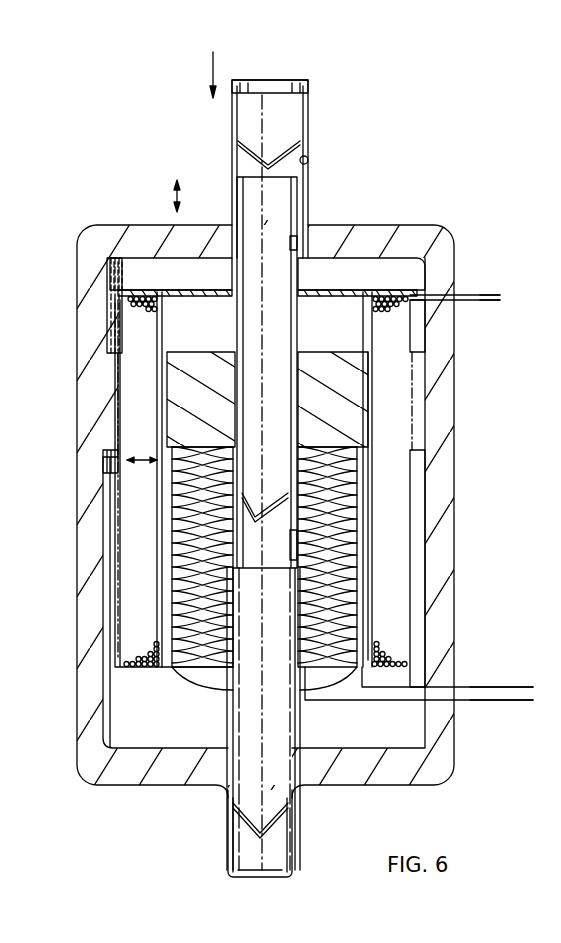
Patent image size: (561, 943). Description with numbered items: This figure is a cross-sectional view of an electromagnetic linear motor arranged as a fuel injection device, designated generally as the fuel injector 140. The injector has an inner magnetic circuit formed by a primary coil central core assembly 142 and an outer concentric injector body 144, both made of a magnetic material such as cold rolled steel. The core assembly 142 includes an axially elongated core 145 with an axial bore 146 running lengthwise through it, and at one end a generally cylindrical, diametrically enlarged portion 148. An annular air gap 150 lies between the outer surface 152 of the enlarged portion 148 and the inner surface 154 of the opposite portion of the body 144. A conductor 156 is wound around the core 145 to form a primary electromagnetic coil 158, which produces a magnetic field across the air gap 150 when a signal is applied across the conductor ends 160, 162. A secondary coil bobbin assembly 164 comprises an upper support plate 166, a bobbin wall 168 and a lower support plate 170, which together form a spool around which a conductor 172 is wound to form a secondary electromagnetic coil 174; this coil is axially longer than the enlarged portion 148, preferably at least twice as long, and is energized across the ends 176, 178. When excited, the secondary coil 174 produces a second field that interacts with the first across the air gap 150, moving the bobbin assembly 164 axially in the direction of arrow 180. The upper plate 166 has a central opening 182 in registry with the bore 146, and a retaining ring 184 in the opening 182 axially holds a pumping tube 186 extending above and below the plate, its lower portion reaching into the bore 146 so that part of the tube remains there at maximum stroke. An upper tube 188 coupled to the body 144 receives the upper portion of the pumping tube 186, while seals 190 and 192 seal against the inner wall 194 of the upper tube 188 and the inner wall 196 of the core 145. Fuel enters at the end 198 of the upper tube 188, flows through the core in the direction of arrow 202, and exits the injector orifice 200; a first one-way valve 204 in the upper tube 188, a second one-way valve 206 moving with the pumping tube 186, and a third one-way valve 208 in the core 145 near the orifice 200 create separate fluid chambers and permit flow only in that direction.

The fuel injector 140 is at (426, 118).
The core assembly 142 is at (113, 340).
The injector body 144 is at (82, 314).
The core 145 is at (295, 702).
The axial bore 146 is at (246, 678).
The diametrically enlarged portion 148 is at (214, 366).
The annular air gap 150 is at (118, 468).
The outer surface 152 is at (370, 345).
The inner surface 154 is at (415, 398).
The conductor 156 is at (320, 702).
The primary electromagnetic coil 158 is at (212, 682).
The conductor end 160 is at (490, 687).
The conductor end 162 is at (490, 700).
The bobbin assembly 164 is at (342, 275).
The upper support plate 166 is at (370, 296).
The bobbin wall 168 is at (370, 302).
The lower support plate 170 is at (152, 668).
The conductor 172 is at (462, 297).
The secondary electromagnetic coil 174 is at (150, 642).
The conductor end 176 is at (500, 295).
The conductor end 178 is at (500, 300).
The arrow 180 is at (177, 195).
The central opening 182 is at (238, 283).
The retaining ring 184 is at (238, 300).
The pumping tube 186 is at (240, 200).
The upper tube 188 is at (308, 120).
The seals 190 is at (292, 242).
The seals 192 is at (292, 540).
The inner wall 194 is at (306, 166).
The inner wall 196 is at (228, 718).
The end 198 is at (295, 80).
The injector orifice 200 is at (260, 877).
The arrow 202 is at (211, 84).
The first one-way valve 204 is at (238, 141).
The second one-way valve 206 is at (256, 505).
The third one-way valve 208 is at (252, 815).